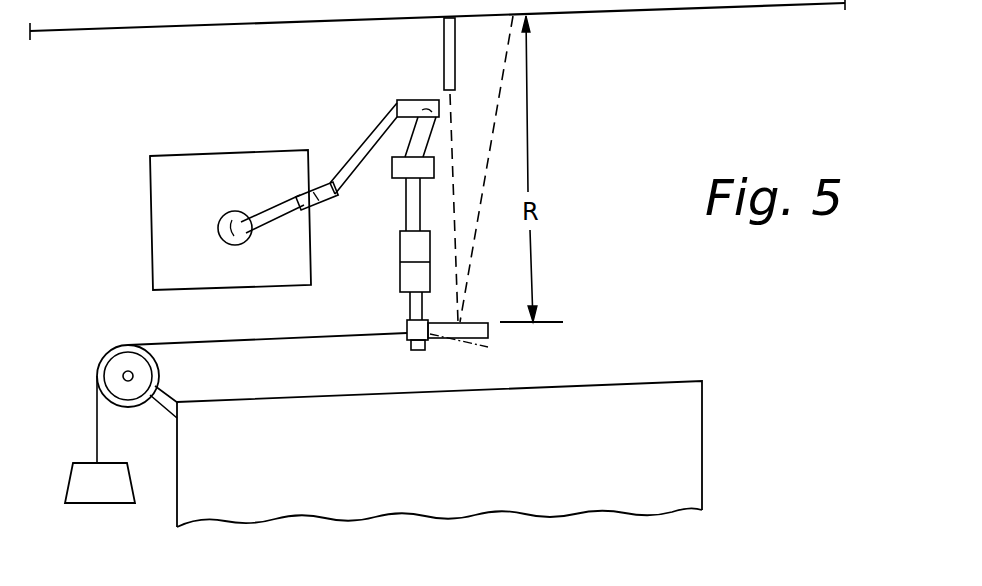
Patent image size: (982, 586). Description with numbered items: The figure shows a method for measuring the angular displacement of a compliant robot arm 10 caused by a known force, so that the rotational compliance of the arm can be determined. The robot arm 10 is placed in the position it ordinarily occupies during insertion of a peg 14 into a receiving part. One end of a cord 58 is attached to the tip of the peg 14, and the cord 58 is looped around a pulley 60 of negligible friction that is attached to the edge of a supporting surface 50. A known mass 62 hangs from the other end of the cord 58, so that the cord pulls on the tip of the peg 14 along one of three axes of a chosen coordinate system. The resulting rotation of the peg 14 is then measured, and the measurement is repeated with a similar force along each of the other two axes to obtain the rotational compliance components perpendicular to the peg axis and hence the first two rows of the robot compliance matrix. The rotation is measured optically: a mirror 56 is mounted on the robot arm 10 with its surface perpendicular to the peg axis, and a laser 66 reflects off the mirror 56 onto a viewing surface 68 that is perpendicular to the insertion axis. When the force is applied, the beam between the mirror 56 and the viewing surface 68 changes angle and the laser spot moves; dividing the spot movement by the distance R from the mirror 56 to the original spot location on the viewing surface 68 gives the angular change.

The robot arm 10 is at (544, 153).
The peg 14 is at (409, 312).
The supporting surface 50 is at (442, 470).
The mirror 56 is at (471, 318).
The cord 58 is at (222, 340).
The pulley 60 is at (115, 362).
The mass 62 is at (85, 507).
The laser 66 is at (443, 44).
The viewing surface 68 is at (651, 14).